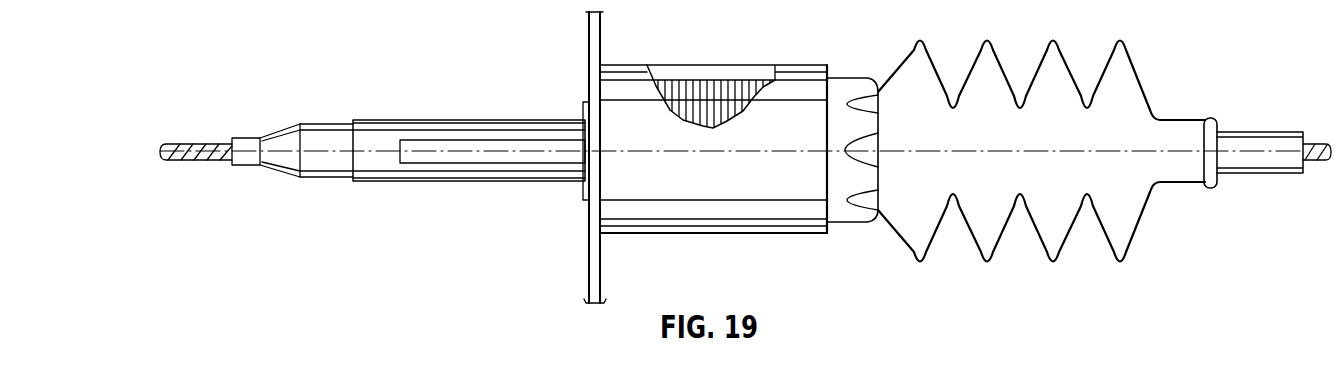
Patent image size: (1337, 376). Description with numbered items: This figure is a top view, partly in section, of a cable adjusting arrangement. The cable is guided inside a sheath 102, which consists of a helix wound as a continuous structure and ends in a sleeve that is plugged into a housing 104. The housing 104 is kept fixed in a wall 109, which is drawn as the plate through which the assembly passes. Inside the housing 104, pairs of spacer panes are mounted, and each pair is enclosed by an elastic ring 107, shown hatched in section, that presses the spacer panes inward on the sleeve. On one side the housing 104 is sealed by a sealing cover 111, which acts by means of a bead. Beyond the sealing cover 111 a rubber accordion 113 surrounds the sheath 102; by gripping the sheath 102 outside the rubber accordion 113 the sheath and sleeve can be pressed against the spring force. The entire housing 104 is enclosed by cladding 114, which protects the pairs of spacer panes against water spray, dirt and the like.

The sheath 102 is at (1257, 145).
The housing 104 is at (379, 128).
The elastic ring 107 is at (708, 95).
The wall 109 is at (595, 50).
The sealing cover 111 is at (847, 88).
The rubber accordion 113 is at (1035, 75).
The cladding 114 is at (808, 88).